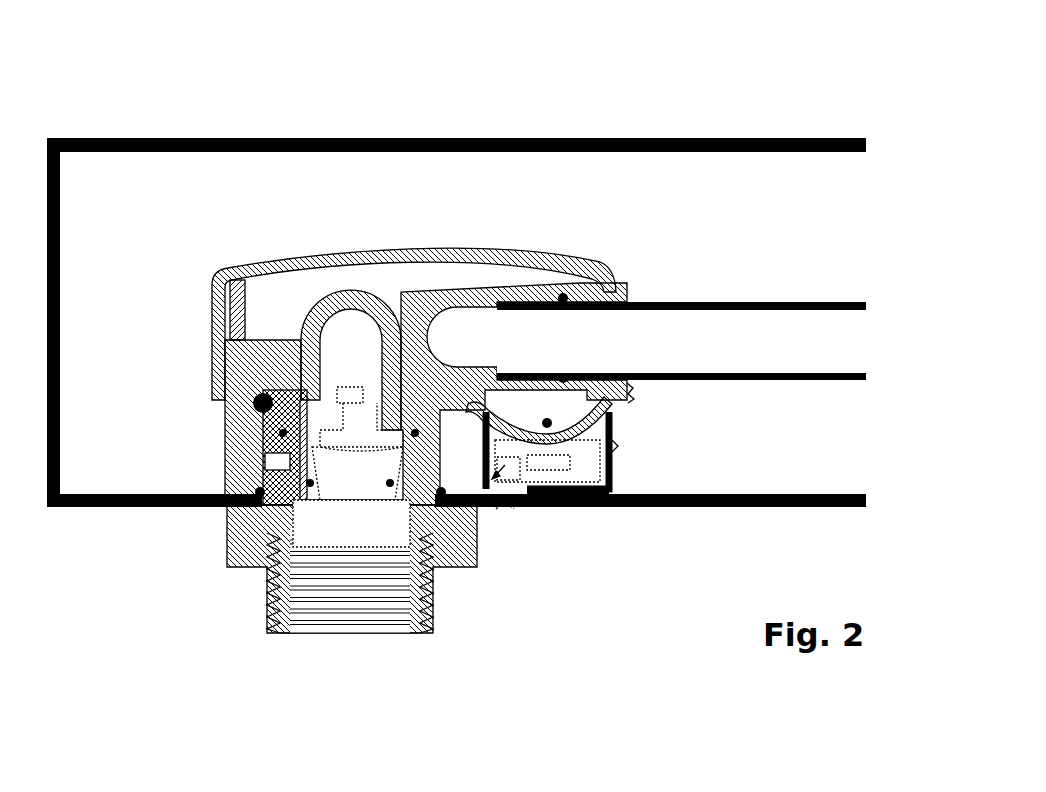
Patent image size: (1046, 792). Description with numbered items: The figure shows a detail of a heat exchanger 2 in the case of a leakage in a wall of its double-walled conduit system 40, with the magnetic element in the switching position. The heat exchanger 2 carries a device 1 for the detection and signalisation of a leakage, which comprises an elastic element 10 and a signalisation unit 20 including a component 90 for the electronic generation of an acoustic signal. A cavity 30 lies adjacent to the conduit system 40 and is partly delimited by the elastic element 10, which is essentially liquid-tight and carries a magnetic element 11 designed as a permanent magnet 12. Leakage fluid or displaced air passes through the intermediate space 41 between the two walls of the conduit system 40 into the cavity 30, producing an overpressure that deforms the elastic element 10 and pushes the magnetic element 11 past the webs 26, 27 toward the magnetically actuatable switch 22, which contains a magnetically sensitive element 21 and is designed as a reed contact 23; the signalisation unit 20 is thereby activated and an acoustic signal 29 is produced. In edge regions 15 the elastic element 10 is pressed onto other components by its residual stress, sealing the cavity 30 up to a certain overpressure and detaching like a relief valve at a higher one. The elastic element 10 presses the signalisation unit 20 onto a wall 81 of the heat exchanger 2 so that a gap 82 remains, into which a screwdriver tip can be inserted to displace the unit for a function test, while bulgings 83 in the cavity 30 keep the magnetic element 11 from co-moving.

The device for the detection and signalisation of a leakage 1 is at (692, 433).
The heat exchanger 2 is at (126, 102).
The elastic element 10 is at (450, 392).
The magnetic element 11 is at (552, 318).
The permanent magnet 12 is at (552, 318).
The edge regions 15 is at (654, 398).
The signalisation unit 20 is at (620, 481).
The magnetically sensitive element 21 is at (543, 536).
The magnetically actuatable switch 22 is at (543, 536).
The reed contact 23 is at (543, 536).
The web 26 is at (482, 413).
The web 27 is at (641, 455).
The acoustic signal 29 is at (505, 545).
The cavity 30 is at (476, 398).
The double-walled conduit system 40 is at (681, 281).
The intermediate space 41 is at (681, 412).
The wall 81 is at (690, 537).
The gap 82 is at (568, 547).
The bulgings 83 is at (521, 388).
The component for the electronic generation of an acoustic signal 90 is at (353, 569).